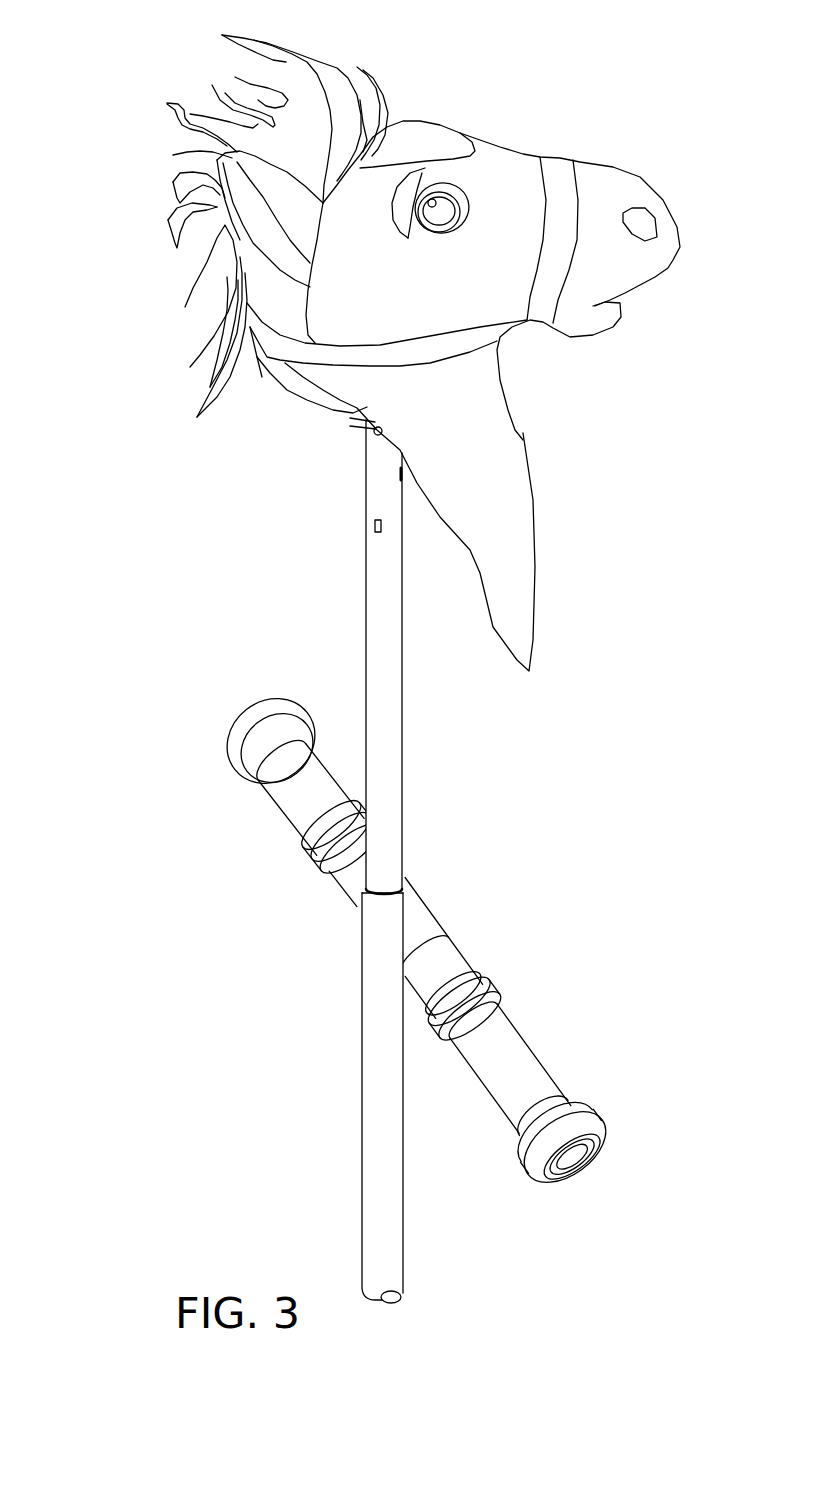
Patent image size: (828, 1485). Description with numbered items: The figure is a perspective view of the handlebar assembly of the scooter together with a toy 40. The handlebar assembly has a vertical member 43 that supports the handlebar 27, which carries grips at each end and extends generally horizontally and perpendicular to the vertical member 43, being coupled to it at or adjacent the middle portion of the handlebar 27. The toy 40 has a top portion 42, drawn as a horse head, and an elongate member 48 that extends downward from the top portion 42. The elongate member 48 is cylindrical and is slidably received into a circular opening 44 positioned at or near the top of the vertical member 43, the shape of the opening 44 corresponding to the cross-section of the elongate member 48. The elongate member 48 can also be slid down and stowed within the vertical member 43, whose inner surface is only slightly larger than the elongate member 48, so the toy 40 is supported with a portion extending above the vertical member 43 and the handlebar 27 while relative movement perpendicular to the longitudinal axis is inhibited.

The toy 40 is at (160, 333).
The top portion 42 is at (420, 117).
The elongate member 48 is at (402, 748).
The opening 44 is at (362, 893).
The vertical member 43 is at (403, 1242).
The handlebar 27 is at (430, 912).